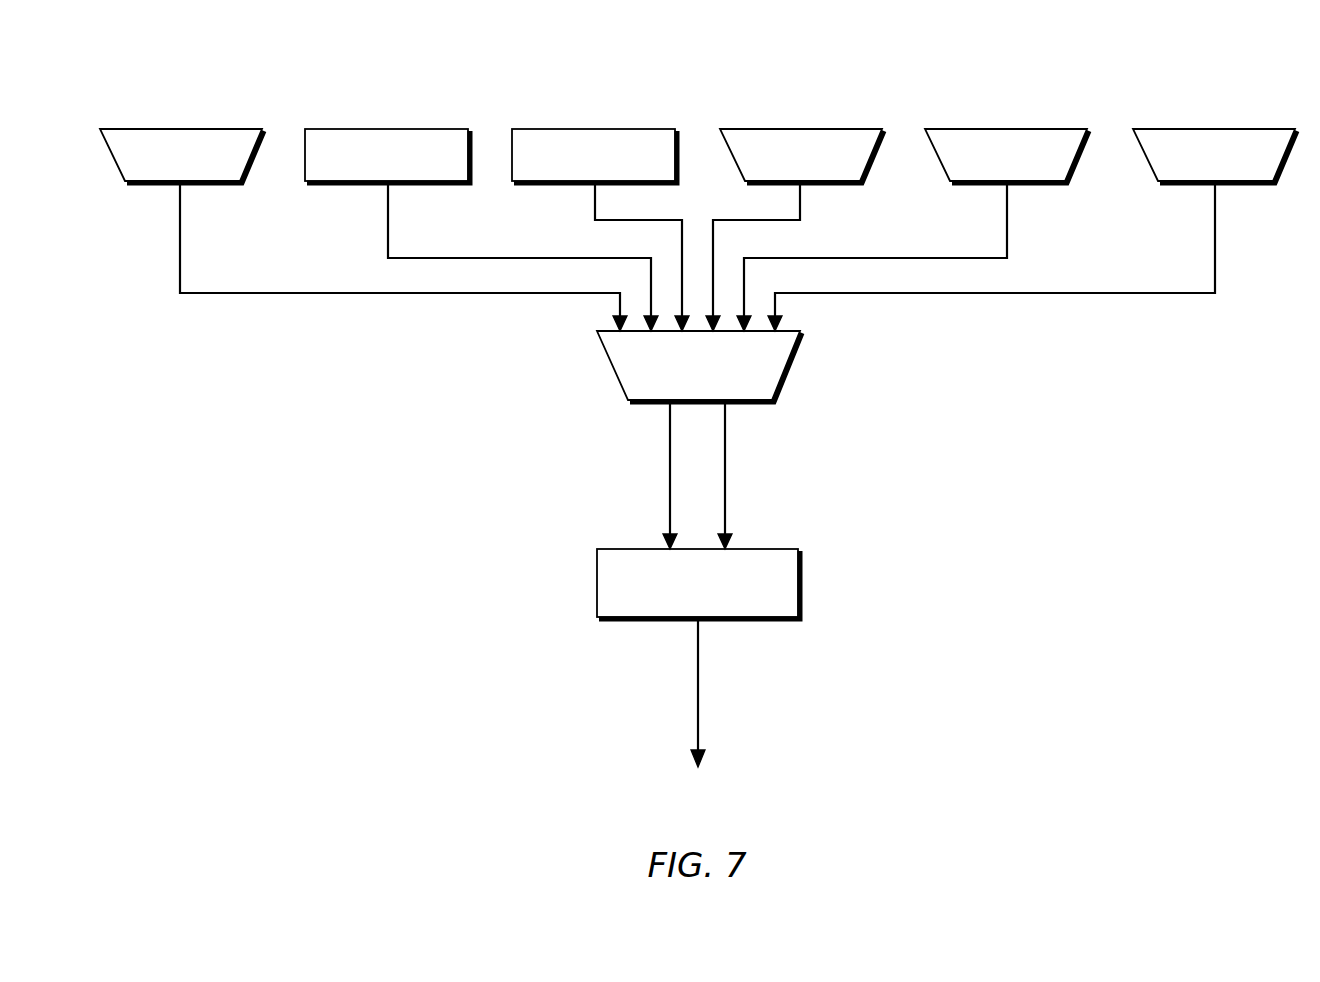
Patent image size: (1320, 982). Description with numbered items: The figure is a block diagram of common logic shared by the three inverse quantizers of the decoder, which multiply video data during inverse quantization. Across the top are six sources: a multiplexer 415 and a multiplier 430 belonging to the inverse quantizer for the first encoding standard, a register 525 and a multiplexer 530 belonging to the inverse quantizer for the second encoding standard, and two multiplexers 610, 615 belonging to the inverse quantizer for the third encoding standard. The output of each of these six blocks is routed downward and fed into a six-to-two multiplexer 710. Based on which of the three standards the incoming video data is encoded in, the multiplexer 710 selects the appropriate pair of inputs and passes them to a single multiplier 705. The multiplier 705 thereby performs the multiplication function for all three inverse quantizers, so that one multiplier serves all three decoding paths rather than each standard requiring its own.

The multiplexer 415 is at (181, 129).
The multiplier 430 is at (388, 129).
The register 525 is at (594, 129).
The multiplexer 530 is at (801, 129).
The multiplexer 610 is at (1008, 129).
The multiplexer 615 is at (1216, 129).
The 6:2 multiplexer 710 is at (608, 364).
The multiplier 705 is at (597, 580).